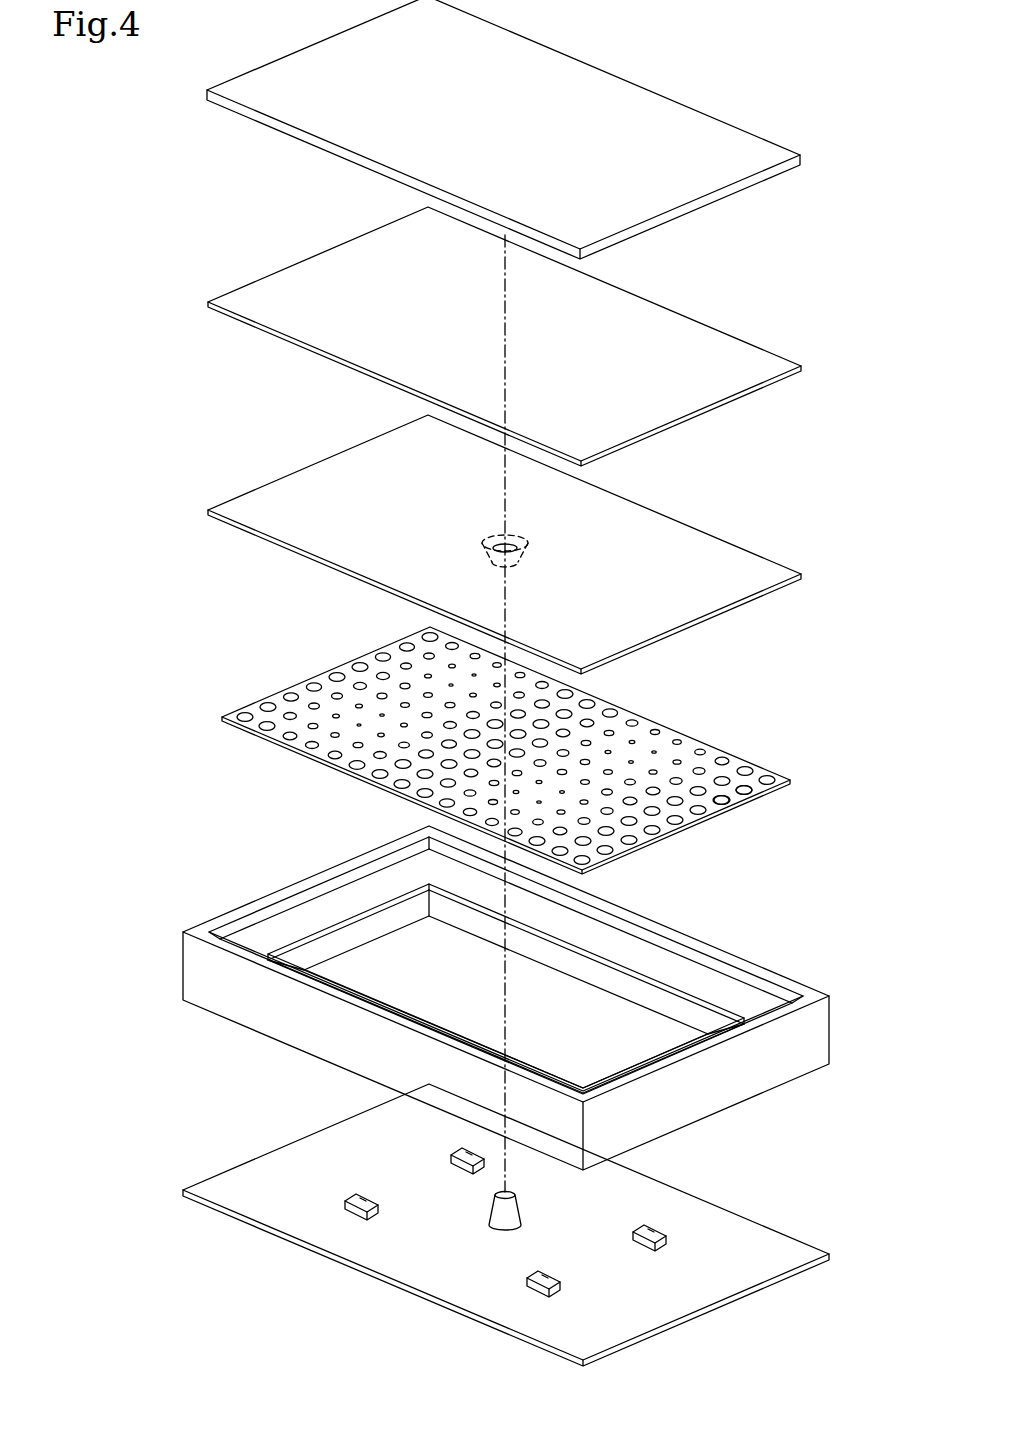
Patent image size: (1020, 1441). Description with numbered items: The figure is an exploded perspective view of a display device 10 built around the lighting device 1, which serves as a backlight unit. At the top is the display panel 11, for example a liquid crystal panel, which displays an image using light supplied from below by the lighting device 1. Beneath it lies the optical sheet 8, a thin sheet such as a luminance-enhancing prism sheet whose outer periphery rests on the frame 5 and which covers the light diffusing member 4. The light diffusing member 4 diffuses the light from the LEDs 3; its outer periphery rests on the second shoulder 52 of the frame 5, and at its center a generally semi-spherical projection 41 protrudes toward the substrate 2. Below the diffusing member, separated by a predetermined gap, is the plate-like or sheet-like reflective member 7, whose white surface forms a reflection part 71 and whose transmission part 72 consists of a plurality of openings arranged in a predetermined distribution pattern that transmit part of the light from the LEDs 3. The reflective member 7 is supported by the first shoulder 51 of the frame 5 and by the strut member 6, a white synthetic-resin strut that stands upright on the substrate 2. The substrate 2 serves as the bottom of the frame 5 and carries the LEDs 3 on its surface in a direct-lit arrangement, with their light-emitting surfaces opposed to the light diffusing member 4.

The lighting device 1 is at (132, 325).
The substrate 2 is at (207, 1200).
The LEDs 3 is at (455, 1147).
The light diffusing member 4 is at (208, 513).
The projection 41 is at (520, 566).
The frame 5 is at (486, 998).
The first shoulder 51 is at (682, 993).
The second shoulder 52 is at (758, 990).
The strut member 6 is at (490, 1212).
The reflective member 7 is at (480, 750).
The reflection part 71 is at (657, 765).
The transmission part 72 is at (714, 806).
The optical sheet 8 is at (208, 305).
The display device 10 is at (758, 73).
The display panel 11 is at (207, 96).